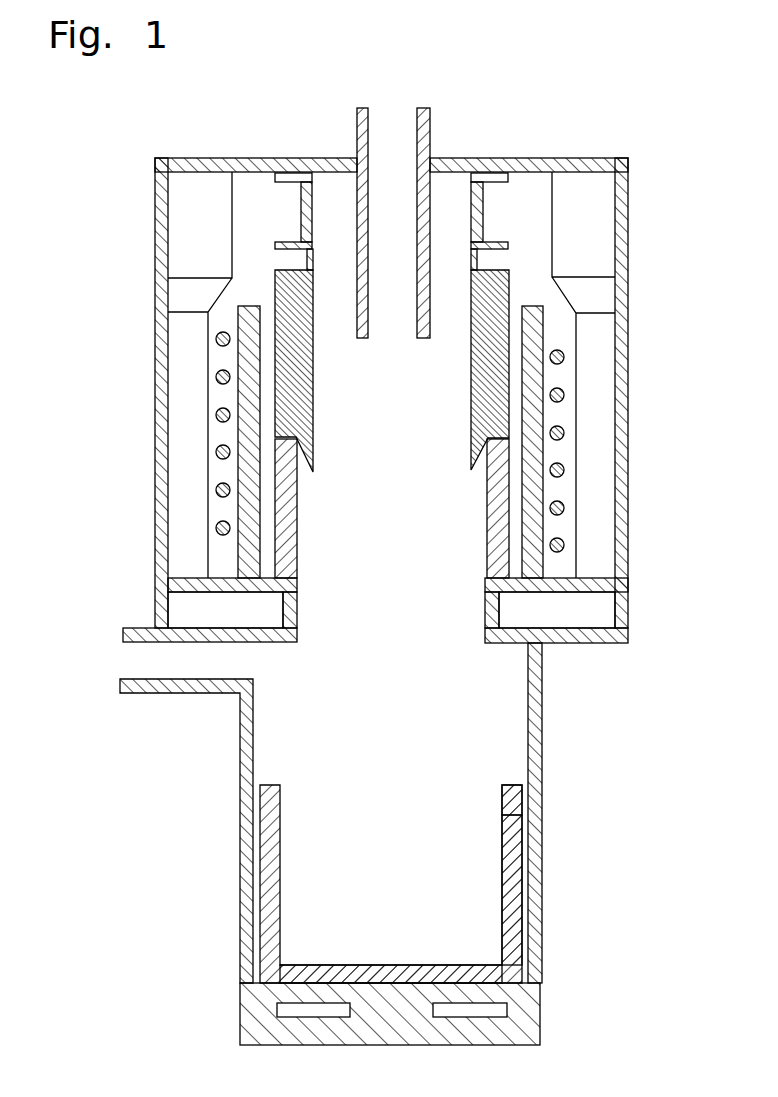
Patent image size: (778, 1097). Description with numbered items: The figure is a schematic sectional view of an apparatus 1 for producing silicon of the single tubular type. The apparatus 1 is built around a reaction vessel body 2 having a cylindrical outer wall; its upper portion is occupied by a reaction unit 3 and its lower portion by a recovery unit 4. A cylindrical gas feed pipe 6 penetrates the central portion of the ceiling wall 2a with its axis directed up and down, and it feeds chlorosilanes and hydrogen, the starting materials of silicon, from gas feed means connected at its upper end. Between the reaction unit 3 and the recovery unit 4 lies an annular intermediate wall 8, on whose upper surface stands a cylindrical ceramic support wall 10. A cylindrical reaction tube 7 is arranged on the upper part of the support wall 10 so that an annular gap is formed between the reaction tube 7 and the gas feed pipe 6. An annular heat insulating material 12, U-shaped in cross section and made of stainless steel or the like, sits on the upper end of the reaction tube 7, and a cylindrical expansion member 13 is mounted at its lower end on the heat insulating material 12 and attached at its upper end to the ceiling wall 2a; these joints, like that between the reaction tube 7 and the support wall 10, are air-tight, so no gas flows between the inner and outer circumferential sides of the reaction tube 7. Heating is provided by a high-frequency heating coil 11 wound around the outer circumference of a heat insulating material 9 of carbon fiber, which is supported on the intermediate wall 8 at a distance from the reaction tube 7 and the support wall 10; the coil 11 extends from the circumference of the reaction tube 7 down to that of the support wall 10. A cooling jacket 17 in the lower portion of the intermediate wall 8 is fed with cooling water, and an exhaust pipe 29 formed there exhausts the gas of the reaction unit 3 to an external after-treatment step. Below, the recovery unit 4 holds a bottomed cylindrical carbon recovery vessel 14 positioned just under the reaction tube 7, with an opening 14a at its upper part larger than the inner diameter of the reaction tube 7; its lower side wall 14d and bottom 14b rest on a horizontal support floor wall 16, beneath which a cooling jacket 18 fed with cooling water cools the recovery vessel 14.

The apparatus for producing silicon 1 is at (620, 96).
The reaction vessel body 2 is at (630, 200).
The ceiling wall 2a is at (567, 157).
The reaction unit 3 is at (634, 292).
The recovery unit 4 is at (546, 766).
The gas feed pipe 6 is at (432, 132).
The reaction tube 7 is at (468, 418).
The intermediate wall 8 is at (495, 612).
The heat insulating material 9 is at (247, 530).
The support wall 10 is at (287, 500).
The high-frequency heating coil 11 is at (565, 393).
The heat insulating material 12 is at (309, 257).
The expansion member 13 is at (300, 205).
The recovery vessel 14 is at (285, 851).
The opening 14a is at (505, 787).
The bottom of crucible 14b is at (383, 965).
The side wall of crucible 14d is at (522, 882).
The support floor wall 16 is at (497, 1010).
The cooling jacket 17 is at (605, 613).
The cooling jacket 18 is at (277, 1007).
The exhaust pipe 29 is at (153, 693).